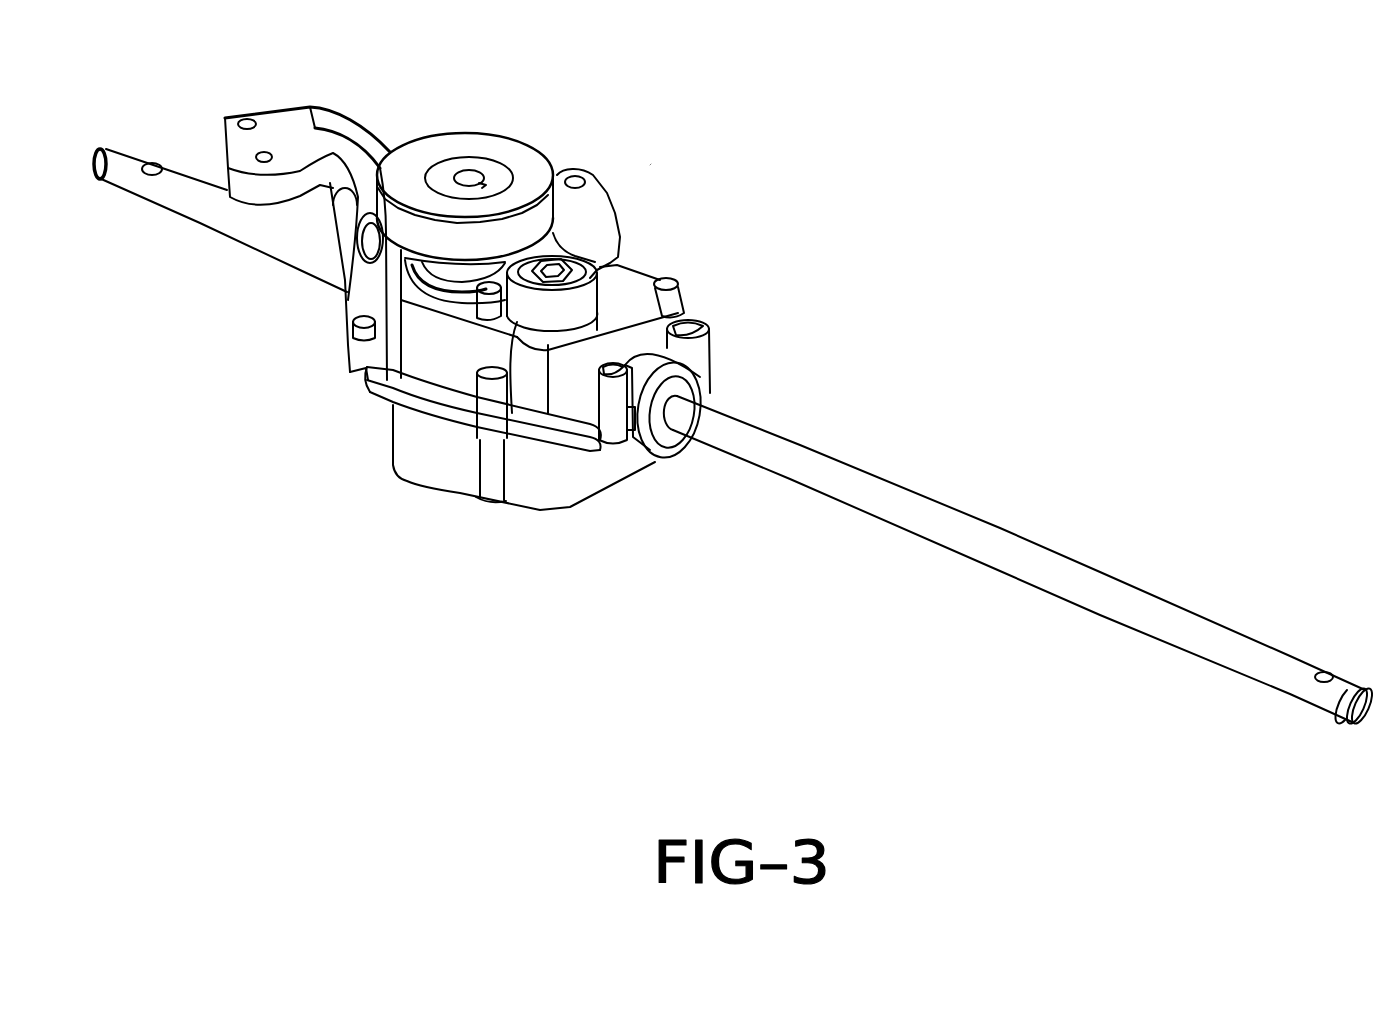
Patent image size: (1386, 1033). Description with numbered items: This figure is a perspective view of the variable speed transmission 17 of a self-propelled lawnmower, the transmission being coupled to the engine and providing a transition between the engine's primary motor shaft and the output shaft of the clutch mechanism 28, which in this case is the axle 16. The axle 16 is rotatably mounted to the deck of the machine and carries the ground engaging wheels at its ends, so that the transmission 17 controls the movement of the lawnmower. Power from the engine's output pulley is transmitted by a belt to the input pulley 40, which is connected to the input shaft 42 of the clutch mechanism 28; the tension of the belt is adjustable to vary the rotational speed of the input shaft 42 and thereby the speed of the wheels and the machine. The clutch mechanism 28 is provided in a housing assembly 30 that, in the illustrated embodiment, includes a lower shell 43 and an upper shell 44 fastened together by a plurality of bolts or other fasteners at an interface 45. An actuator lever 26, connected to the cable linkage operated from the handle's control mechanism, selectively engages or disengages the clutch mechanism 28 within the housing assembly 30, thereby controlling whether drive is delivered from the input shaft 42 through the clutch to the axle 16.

The axle 16 is at (787, 467).
The variable speed transmission 17 is at (650, 165).
The actuator lever 26 is at (607, 199).
The clutch mechanism 28 is at (405, 480).
The housing assembly 30 is at (467, 498).
The input pulley 40 is at (503, 133).
The input shaft 42 is at (469, 170).
The lower shell 43 is at (612, 487).
The upper shell 44 is at (683, 304).
The interface 45 is at (365, 393).